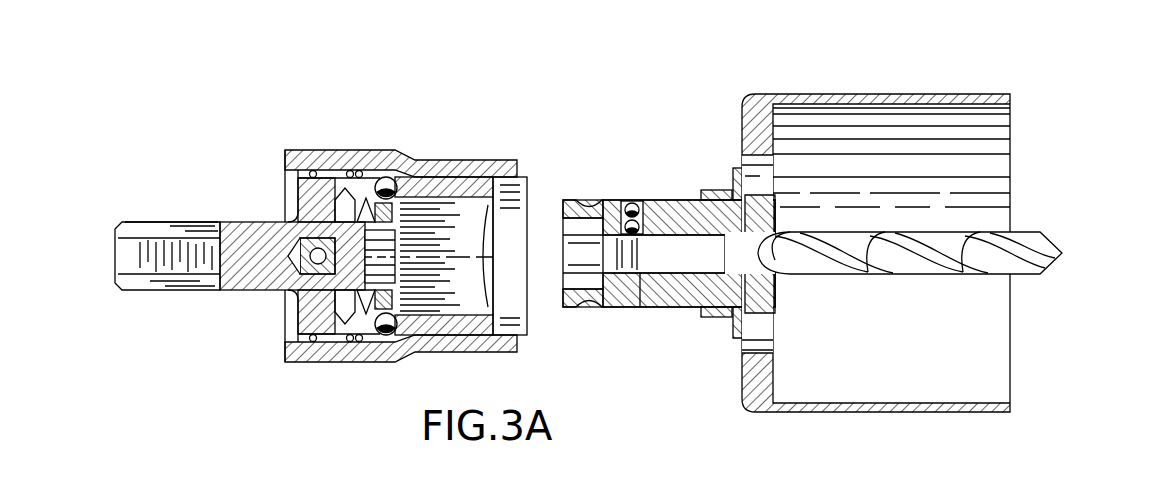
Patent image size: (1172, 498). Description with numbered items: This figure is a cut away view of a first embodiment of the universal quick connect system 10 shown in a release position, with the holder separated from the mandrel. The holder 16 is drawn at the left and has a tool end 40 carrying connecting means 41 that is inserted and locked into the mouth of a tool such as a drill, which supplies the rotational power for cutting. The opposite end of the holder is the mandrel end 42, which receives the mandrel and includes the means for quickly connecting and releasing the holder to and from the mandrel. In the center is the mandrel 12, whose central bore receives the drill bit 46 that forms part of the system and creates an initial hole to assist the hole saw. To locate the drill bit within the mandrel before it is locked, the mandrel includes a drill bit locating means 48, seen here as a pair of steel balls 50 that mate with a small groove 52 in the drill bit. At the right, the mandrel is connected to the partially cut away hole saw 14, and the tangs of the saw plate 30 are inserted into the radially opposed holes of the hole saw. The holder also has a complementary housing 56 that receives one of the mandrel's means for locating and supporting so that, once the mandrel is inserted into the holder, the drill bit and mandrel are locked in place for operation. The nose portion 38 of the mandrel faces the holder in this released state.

The universal quick connect system 10 is at (203, 152).
The mandrel 12 is at (636, 310).
The hole saw 14 is at (963, 94).
The holder 16 is at (305, 148).
The saw plate 30 is at (733, 182).
The nose of shaft 38 is at (572, 192).
The tool end 40 is at (140, 300).
The connecting means 41 is at (143, 233).
The mandrel end 42 is at (533, 168).
The drill bit 46 is at (1048, 243).
The drill bit locating means 48 is at (646, 188).
The steel balls 50 is at (630, 203).
The groove 52 is at (622, 274).
The complementary housing 56 is at (350, 343).